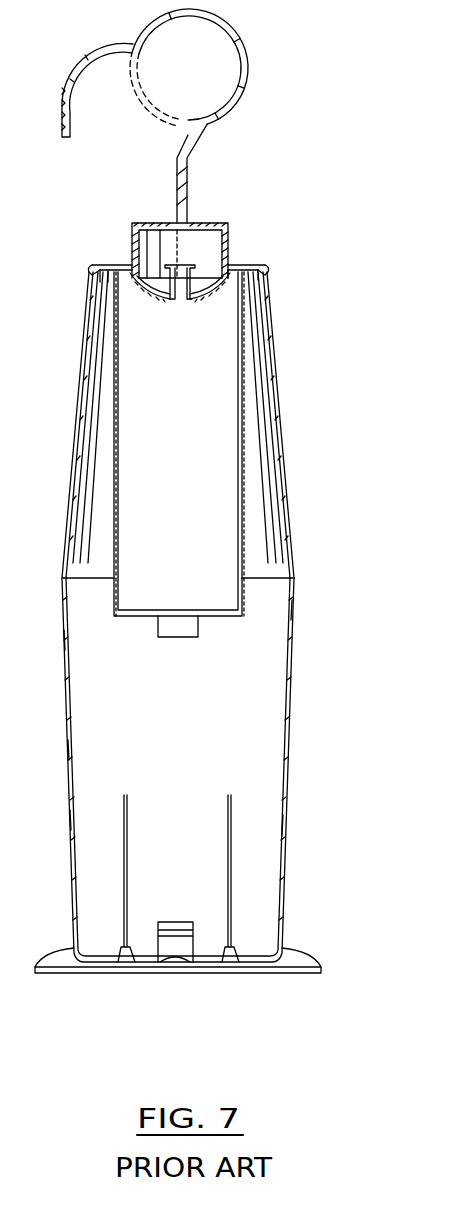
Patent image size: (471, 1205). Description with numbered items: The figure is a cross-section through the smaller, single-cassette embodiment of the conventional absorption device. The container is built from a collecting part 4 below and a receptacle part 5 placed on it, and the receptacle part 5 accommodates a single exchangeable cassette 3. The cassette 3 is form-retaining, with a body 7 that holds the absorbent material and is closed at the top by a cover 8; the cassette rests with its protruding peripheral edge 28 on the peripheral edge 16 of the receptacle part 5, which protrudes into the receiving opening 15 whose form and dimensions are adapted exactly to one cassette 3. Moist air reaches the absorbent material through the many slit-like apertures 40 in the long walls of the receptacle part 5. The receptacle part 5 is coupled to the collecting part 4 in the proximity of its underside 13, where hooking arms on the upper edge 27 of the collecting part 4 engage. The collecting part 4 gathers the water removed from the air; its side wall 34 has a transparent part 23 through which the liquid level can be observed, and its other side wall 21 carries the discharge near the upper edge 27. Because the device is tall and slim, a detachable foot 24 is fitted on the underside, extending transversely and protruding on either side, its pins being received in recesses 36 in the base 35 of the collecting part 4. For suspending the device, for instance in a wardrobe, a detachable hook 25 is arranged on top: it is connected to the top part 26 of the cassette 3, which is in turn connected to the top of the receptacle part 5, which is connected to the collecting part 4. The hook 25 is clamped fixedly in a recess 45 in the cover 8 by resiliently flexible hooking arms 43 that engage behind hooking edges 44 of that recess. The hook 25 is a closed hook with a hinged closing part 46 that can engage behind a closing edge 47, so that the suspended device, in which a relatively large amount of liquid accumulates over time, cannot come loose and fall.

The exchangeable cassette 3 is at (223, 626).
The collecting part 4 is at (290, 780).
The receptacle part 5 is at (280, 377).
The body 7 is at (118, 468).
The cover 8 is at (130, 276).
The underside 13 is at (80, 570).
The opening 15 is at (240, 267).
The peripheral edge 16 is at (105, 280).
The side wall 21 is at (132, 743).
The transparent part 23 is at (67, 820).
The detachable foot 24 is at (297, 954).
The detachable hook 25 is at (233, 125).
The top part 26 is at (232, 266).
The upper edge 27 is at (88, 590).
The peripheral edge 28 is at (100, 277).
The side wall 34 is at (293, 606).
The base 35 is at (100, 955).
The recesses 36 is at (173, 934).
The slit-like apertures 40 is at (78, 515).
The resiliently flexible hooking arms 43 is at (131, 250).
The hooking edges 44 is at (233, 282).
The recess 45 is at (152, 288).
The hinged closing part 46 is at (72, 66).
The closing edge 47 is at (188, 133).